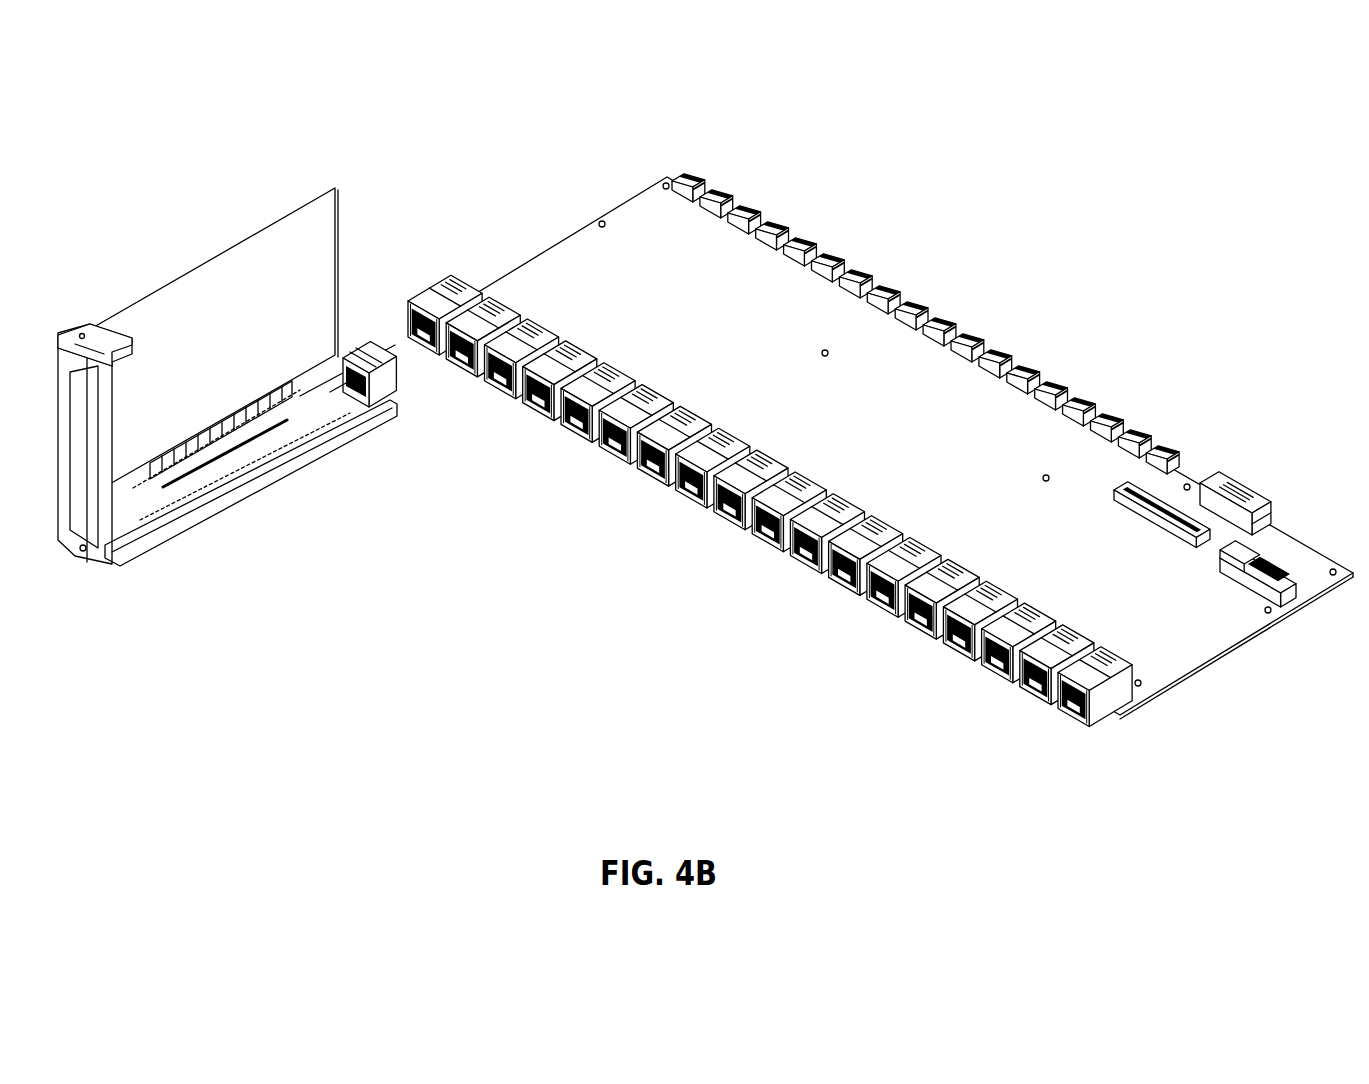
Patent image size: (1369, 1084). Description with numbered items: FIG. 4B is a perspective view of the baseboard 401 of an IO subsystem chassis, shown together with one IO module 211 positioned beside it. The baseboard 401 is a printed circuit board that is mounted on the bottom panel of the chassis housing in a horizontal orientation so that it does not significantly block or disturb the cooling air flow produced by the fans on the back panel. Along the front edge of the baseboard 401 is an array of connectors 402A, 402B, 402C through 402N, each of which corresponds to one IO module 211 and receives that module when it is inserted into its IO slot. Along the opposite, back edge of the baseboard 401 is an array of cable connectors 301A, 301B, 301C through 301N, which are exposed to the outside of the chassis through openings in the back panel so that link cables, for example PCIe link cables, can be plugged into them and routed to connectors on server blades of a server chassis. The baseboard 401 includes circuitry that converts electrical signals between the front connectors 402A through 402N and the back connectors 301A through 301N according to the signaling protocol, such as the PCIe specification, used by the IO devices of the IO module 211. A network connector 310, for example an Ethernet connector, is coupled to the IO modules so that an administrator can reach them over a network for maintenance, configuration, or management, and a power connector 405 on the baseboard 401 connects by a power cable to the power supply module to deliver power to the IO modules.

The baseboard 401 is at (557, 240).
The cable connector 301N is at (700, 183).
The cable connector 301C is at (1108, 420).
The cable connector 301B is at (1140, 442).
The cable connector 301A is at (1170, 462).
The connector 402N is at (448, 275).
The connector 402C is at (982, 673).
The connector 402B is at (1023, 697).
The connector 402A is at (1068, 728).
The network connector 310 is at (1262, 480).
The power connector 405 is at (1232, 567).
The IO module 211 is at (220, 575).